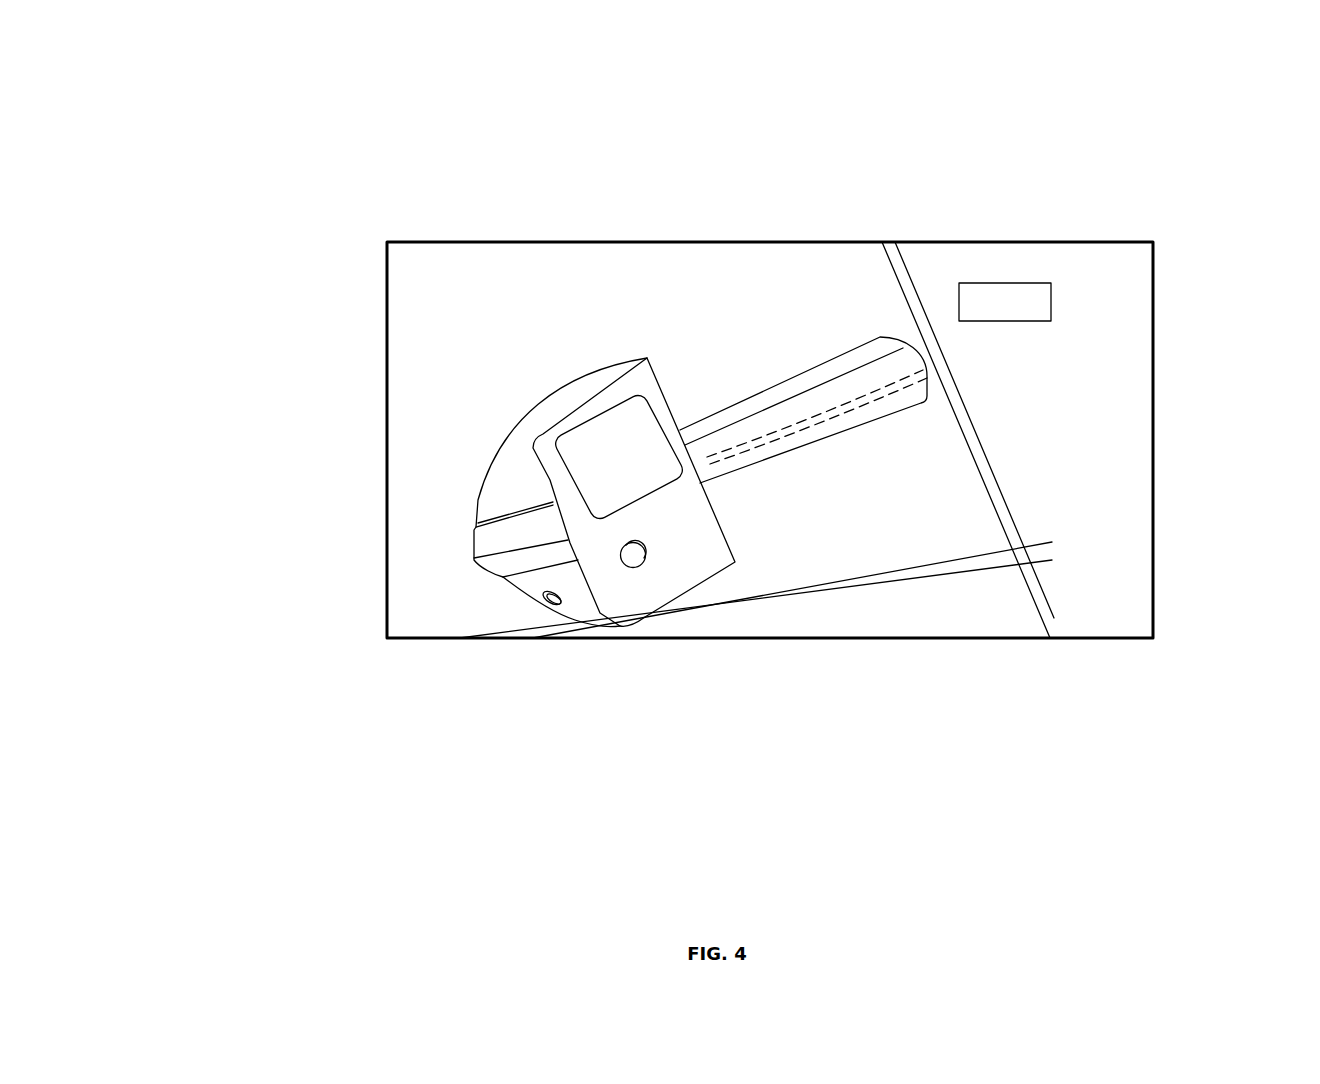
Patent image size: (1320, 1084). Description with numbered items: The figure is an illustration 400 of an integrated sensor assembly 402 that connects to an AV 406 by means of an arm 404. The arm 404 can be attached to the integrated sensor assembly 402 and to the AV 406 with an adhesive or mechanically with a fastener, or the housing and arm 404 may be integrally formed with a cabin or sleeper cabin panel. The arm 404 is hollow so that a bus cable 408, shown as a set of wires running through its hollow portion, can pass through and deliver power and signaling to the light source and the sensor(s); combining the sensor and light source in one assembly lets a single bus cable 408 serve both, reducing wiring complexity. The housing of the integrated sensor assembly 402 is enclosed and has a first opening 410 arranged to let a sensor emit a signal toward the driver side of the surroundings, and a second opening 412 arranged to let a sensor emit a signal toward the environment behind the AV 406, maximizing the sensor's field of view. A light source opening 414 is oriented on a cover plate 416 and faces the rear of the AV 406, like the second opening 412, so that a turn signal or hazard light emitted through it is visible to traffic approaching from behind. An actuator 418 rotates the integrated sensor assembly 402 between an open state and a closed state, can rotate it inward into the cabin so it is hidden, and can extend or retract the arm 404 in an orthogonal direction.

The illustration 400 is at (214, 125).
The integrated sensor assembly 402 is at (493, 447).
The arm 404 is at (832, 405).
The AV 406 is at (908, 507).
The bus cable 408 is at (927, 375).
The first opening 410 is at (546, 606).
The second opening 412 is at (640, 568).
The light source opening 414 is at (608, 457).
The cover plate 416 is at (677, 558).
The actuator 418 is at (1008, 283).